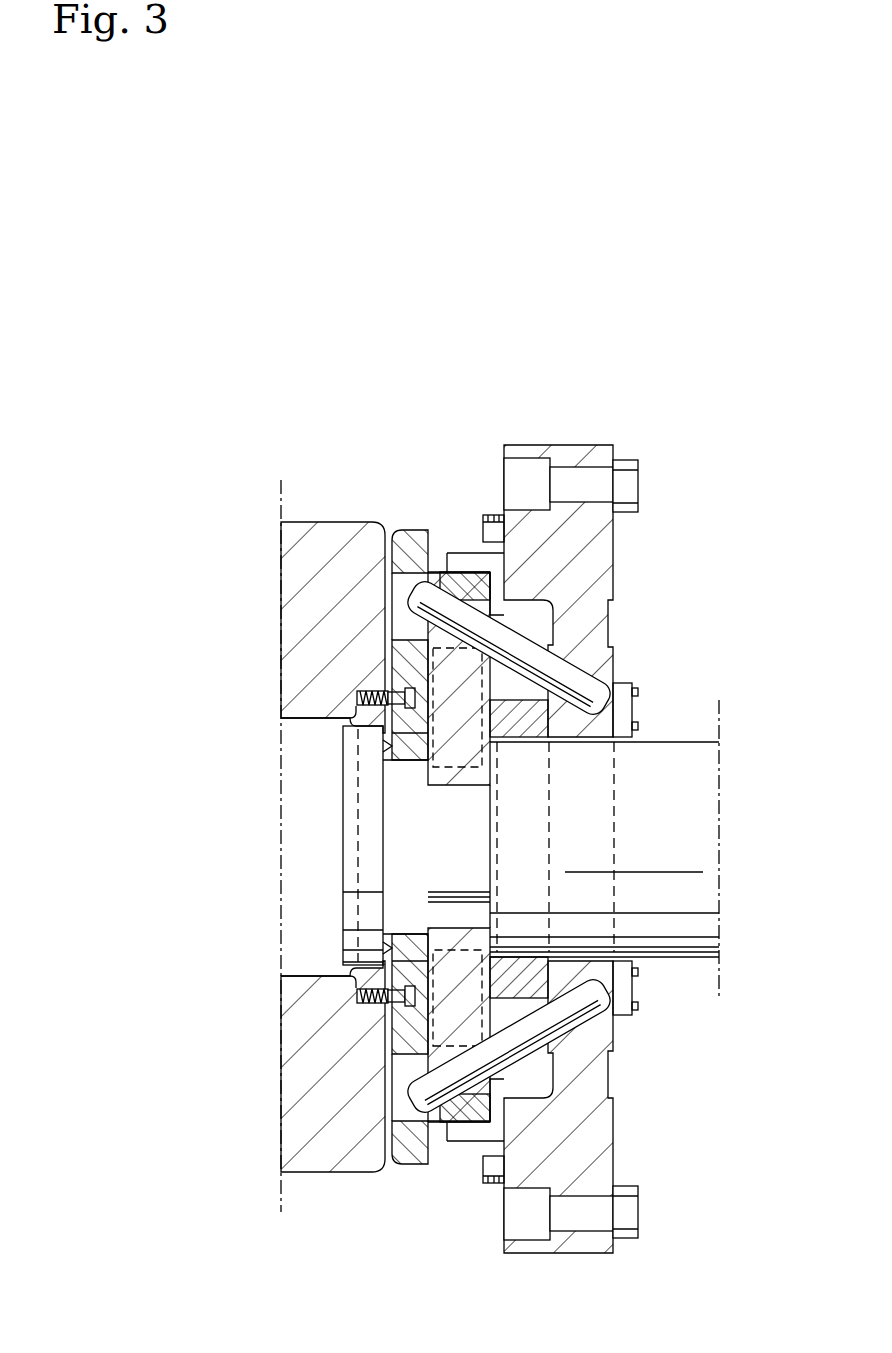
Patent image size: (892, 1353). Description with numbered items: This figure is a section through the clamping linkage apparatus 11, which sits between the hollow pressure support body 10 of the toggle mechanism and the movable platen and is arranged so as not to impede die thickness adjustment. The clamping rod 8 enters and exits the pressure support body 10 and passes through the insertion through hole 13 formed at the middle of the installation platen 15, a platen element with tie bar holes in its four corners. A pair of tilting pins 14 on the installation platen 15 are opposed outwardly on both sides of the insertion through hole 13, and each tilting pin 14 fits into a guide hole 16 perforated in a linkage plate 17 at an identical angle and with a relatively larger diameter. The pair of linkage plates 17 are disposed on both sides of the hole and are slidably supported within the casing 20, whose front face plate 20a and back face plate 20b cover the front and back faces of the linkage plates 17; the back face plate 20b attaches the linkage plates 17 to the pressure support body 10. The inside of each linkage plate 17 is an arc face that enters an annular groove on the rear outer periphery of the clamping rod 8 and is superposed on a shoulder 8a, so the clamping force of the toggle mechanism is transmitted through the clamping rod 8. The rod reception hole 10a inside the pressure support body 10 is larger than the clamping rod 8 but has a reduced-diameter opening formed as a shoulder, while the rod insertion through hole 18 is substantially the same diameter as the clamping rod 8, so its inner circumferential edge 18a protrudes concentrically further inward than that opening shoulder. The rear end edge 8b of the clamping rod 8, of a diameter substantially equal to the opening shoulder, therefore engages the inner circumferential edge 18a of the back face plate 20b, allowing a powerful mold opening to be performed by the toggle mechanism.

The clamping rod 8 is at (658, 757).
The shoulder 8a is at (485, 775).
The rear end edge 8b is at (362, 848).
The pressure support body 10 is at (313, 545).
The rod reception hole 10a is at (315, 728).
The clamping linkage apparatus 11 is at (624, 436).
The insertion through hole 13 is at (590, 850).
The tilting pin 14 is at (590, 607).
The installation platen 15 is at (597, 543).
The guide hole 16 is at (455, 1090).
The linkage plate 17 is at (590, 655).
The rod insertion through hole 18 is at (400, 768).
The inner circumferential edge 18a is at (385, 747).
The casing 20 is at (404, 1176).
The front face plate 20a is at (603, 1043).
The back face plate 20b is at (413, 545).